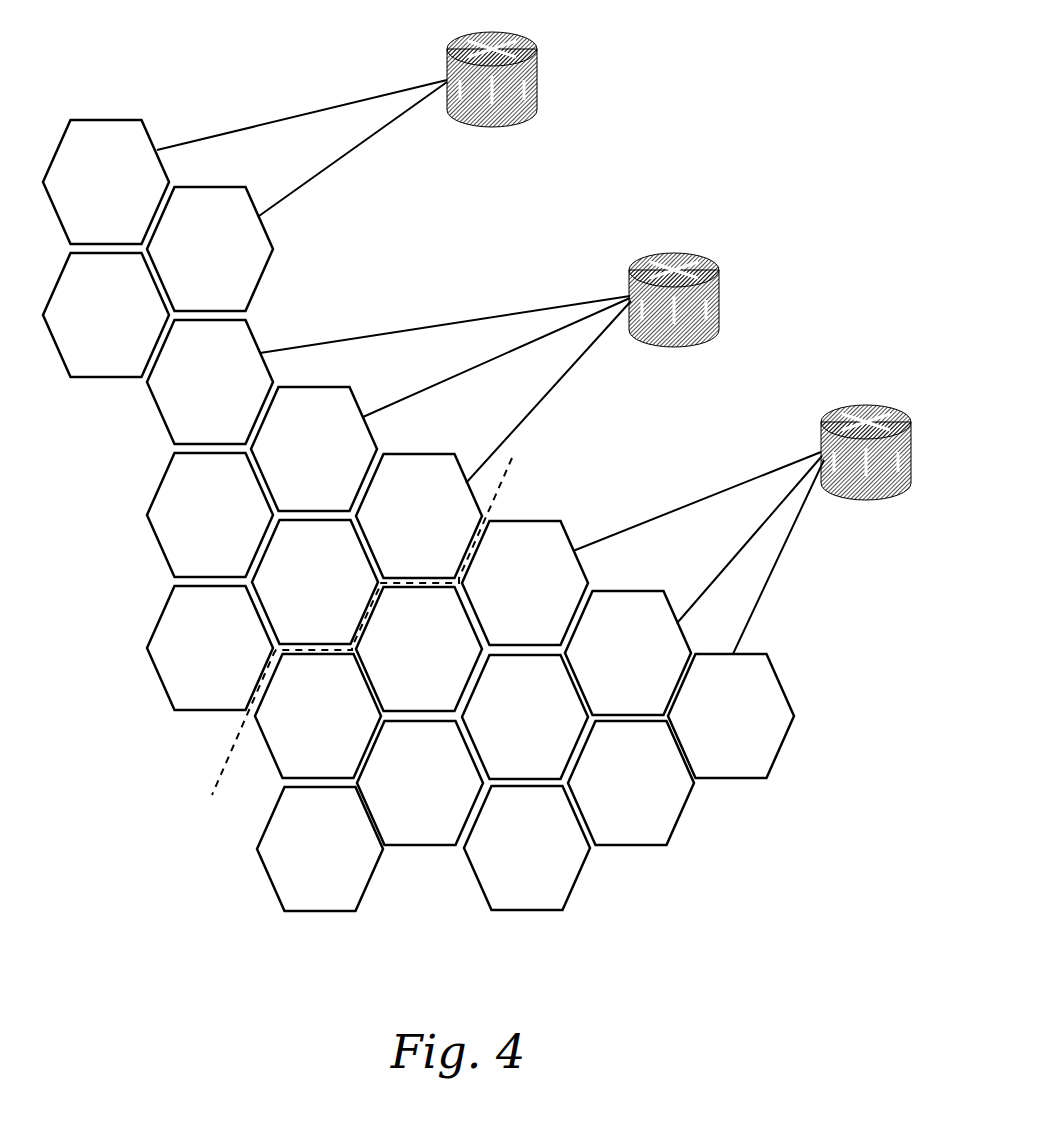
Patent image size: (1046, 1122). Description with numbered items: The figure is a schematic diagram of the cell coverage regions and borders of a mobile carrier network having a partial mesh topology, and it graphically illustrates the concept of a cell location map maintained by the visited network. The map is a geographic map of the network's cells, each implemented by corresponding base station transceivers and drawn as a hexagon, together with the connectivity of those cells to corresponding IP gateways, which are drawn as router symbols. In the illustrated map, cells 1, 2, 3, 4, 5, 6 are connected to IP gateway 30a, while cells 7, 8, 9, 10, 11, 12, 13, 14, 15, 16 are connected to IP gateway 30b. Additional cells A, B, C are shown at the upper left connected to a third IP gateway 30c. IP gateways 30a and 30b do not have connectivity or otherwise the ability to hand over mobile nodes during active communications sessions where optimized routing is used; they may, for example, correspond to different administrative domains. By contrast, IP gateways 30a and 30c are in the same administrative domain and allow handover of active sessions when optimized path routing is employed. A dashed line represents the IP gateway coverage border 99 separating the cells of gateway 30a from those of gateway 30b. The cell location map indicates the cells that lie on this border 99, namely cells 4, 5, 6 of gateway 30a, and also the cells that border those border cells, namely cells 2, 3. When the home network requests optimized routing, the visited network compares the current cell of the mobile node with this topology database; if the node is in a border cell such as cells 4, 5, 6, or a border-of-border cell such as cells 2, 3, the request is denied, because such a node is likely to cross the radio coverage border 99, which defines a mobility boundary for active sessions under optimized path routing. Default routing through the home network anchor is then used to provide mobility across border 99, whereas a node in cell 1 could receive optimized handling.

The IP gateway 30a is at (719, 300).
The IP gateway 30b is at (889, 405).
The IP gateway 30c is at (537, 80).
The IP gateway coverage border 99 is at (500, 483).
The cell 1 is at (210, 382).
The cell 2 is at (210, 515).
The cell 3 is at (314, 449).
The cell 4 is at (210, 648).
The cell 5 is at (315, 582).
The cell 6 is at (419, 516).
The cell 7 is at (318, 716).
The cell 8 is at (419, 649).
The cell 9 is at (525, 583).
The cell 10 is at (320, 849).
The cell 11 is at (420, 783).
The cell 12 is at (525, 717).
The cell 13 is at (628, 653).
The cell 14 is at (527, 848).
The cell 15 is at (631, 783).
The cell 16 is at (731, 716).
The cell A is at (210, 249).
The cell B is at (106, 315).
The cell C is at (106, 182).